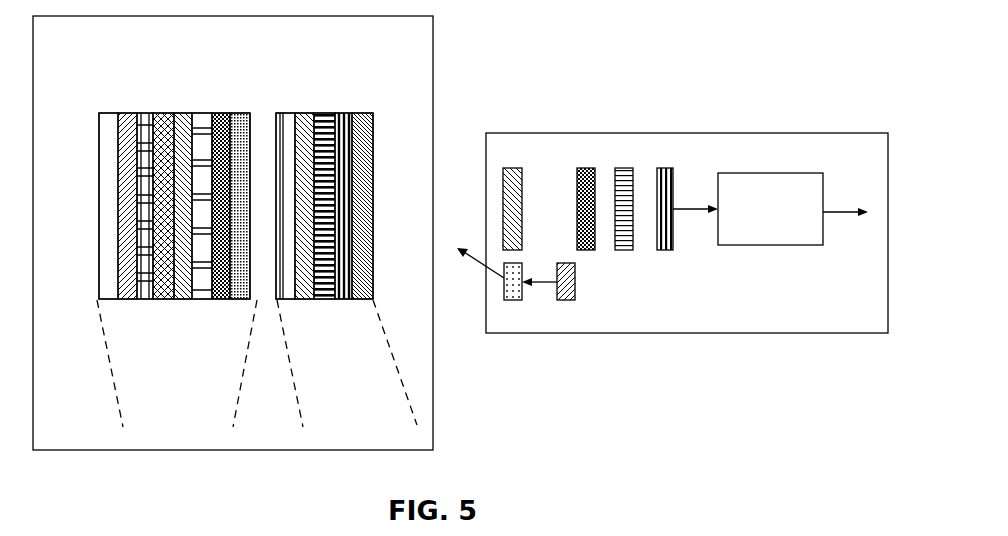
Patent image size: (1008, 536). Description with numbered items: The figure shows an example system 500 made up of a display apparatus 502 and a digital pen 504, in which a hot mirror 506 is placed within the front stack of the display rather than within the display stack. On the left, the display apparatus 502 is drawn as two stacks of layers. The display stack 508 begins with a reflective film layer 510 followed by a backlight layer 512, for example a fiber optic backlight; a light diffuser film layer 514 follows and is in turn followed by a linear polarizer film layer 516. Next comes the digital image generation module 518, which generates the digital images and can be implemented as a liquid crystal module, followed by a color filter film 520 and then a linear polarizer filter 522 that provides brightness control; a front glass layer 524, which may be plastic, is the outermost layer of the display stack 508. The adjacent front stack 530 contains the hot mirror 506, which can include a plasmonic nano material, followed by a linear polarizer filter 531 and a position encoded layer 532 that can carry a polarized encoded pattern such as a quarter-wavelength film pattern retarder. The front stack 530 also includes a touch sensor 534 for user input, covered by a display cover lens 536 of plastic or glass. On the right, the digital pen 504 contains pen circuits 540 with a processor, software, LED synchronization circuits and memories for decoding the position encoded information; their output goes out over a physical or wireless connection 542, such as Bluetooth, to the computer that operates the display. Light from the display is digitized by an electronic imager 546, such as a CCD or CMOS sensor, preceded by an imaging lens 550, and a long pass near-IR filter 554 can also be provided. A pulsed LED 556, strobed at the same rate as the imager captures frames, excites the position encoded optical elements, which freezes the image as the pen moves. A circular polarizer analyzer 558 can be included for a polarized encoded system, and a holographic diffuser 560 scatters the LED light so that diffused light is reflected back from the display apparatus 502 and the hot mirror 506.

The system 500 is at (663, 54).
The display apparatus 502 is at (433, 57).
The digital pen 504 is at (753, 133).
The hot mirror 506 is at (283, 299).
The display stack 508 is at (190, 244).
The reflective film layer 510 is at (108, 299).
The backlight layer 512 is at (127, 299).
The light diffuser film layer 514 is at (148, 113).
The linear polarizer film layer 516 is at (162, 113).
The digital image generation module 518 is at (182, 299).
The color filter film 520 is at (200, 299).
The linear polarizer filter 522 is at (220, 113).
The front glass layer 524 is at (240, 113).
The front stack 530 is at (346, 244).
The linear polarizer filter 531 is at (300, 113).
The position encoded layer 532 is at (325, 299).
The touch sensor 534 is at (342, 113).
The display cover lens 536 is at (362, 113).
The pen circuits 540 is at (768, 173).
The physical or wireless connection 542 is at (833, 212).
The electronic imager 546 is at (665, 250).
The imaging lens 550 is at (624, 250).
The long pass near-IR filter 554 is at (583, 168).
The pulsed LED 556 is at (575, 288).
The pen layer 558 is at (512, 168).
The holographic diffuser 560 is at (512, 300).